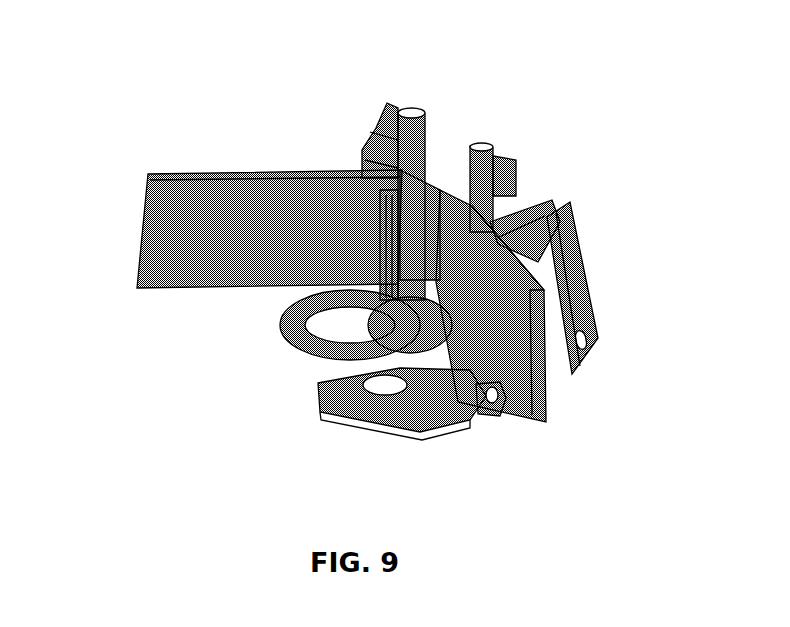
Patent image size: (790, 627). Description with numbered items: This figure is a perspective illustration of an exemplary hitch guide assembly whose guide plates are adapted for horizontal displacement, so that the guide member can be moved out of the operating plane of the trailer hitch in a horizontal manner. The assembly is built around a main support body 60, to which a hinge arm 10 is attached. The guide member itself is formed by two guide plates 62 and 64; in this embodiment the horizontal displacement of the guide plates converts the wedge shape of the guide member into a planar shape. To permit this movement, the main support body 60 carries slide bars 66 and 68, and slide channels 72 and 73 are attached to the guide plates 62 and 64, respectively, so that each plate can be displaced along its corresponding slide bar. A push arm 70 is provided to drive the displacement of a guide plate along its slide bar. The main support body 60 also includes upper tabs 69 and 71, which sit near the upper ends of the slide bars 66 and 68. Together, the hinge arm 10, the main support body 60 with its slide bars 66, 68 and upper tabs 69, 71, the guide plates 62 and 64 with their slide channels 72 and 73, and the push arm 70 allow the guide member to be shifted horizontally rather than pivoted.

The hinge arm 10 is at (286, 329).
The main support body 60 is at (322, 411).
The guide plate 62 is at (143, 208).
The guide plate 64 is at (496, 400).
The slide bar 66 is at (411, 114).
The slide bar 68 is at (484, 140).
The upper tab 69 is at (380, 116).
The push arm 70 is at (588, 287).
The upper tab 71 is at (519, 168).
The slide channel 72 is at (360, 177).
The slide channel 73 is at (505, 218).